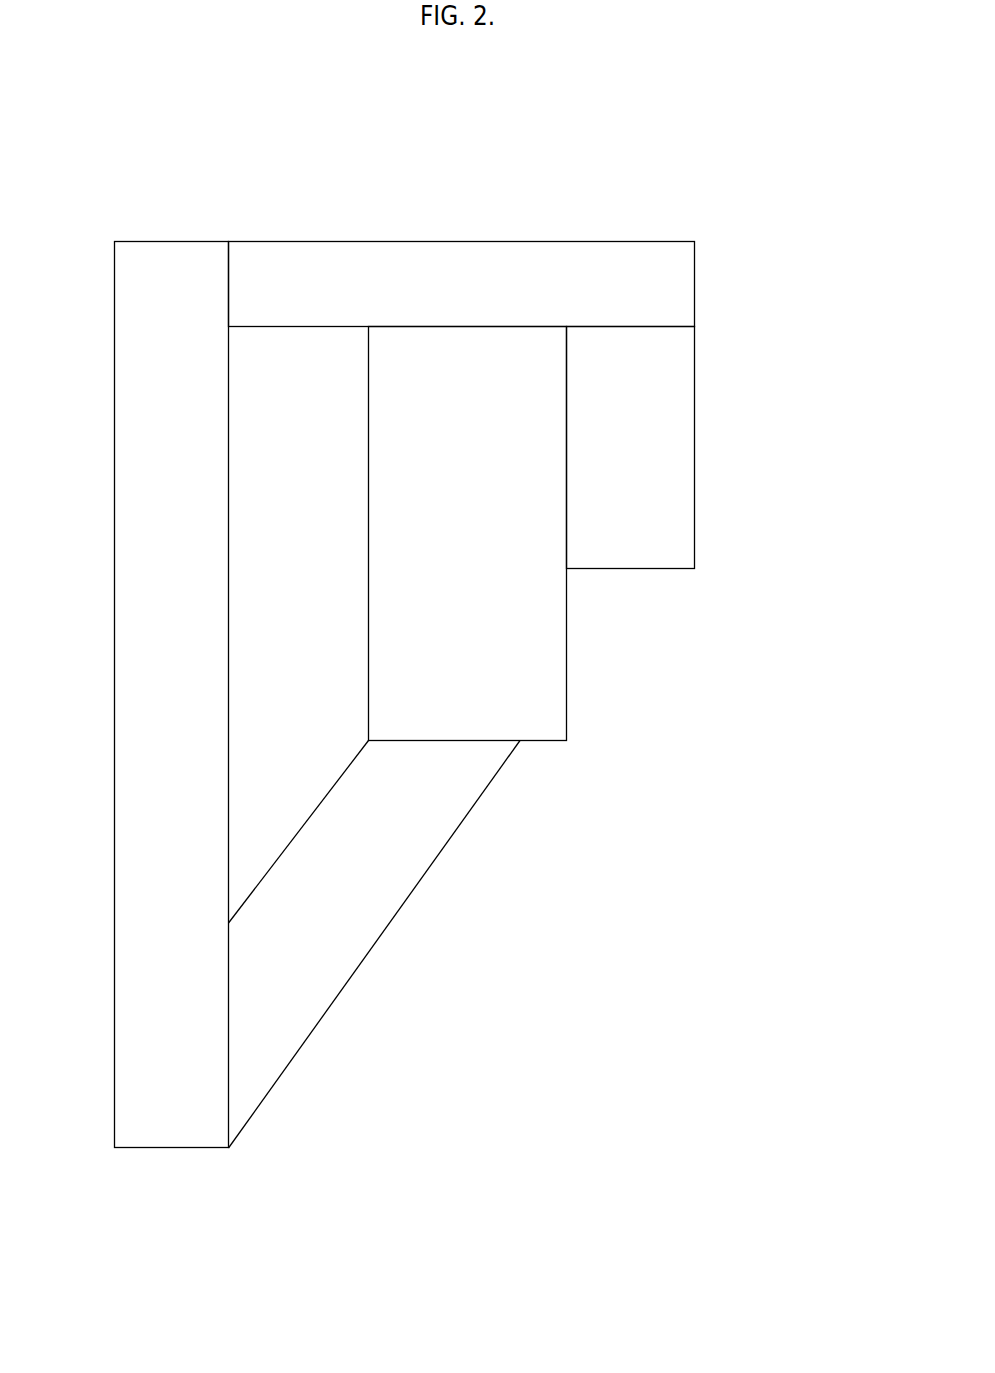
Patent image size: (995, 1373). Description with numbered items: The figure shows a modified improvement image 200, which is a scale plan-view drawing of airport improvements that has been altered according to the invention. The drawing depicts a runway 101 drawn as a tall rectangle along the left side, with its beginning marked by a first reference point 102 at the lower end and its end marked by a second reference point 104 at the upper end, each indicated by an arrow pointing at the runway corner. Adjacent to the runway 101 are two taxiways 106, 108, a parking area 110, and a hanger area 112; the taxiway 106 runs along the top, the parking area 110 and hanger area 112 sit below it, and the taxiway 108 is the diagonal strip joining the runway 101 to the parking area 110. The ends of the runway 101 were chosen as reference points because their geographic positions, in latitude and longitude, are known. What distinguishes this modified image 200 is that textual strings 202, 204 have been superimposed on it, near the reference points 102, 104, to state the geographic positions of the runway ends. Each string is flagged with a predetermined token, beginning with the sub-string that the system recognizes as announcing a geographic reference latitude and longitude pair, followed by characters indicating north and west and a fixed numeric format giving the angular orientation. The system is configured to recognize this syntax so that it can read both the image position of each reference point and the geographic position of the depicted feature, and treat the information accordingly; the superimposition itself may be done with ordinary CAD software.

The modified improvement image 200 is at (677, 108).
The runway 101 is at (172, 695).
The first reference point 102 is at (158, 1162).
The second reference point 104 is at (171, 228).
The taxiway 106 is at (462, 284).
The taxiway 108 is at (375, 945).
The parking area 110 is at (468, 534).
The hanger area 112 is at (631, 448).
The textual string 202 is at (468, 1150).
The textual string 204 is at (354, 157).